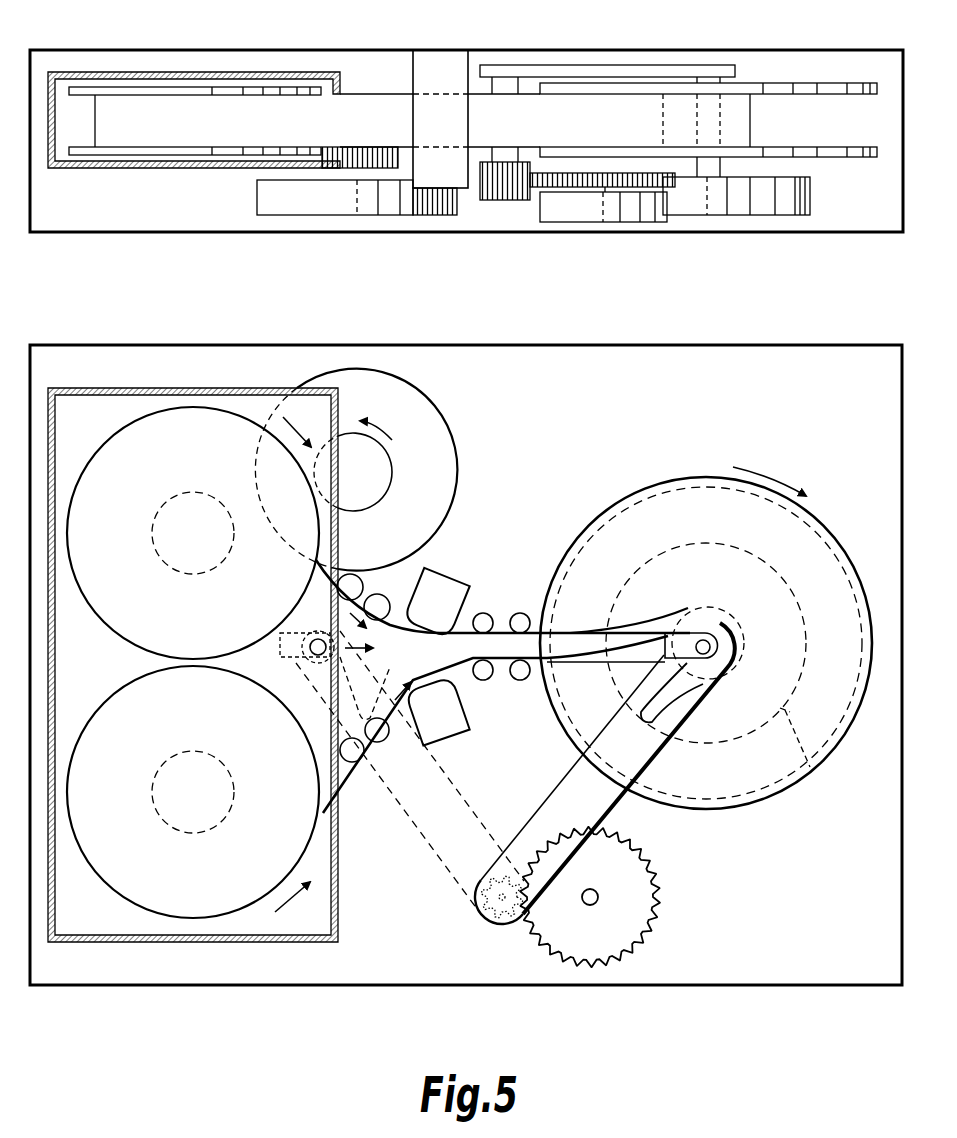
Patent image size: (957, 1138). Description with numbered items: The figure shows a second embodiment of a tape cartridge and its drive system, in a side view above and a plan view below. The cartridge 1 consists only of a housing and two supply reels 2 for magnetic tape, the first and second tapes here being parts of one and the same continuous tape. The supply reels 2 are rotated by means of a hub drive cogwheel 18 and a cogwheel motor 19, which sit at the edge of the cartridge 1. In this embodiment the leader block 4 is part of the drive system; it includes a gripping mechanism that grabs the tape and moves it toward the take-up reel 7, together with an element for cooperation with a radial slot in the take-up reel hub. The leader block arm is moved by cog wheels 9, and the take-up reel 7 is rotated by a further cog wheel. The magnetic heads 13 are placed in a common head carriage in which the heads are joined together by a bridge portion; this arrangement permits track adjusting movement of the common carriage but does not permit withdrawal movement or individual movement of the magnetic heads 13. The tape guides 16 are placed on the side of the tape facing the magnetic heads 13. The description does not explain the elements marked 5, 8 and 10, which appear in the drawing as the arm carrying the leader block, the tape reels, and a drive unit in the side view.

The cartridge 1 is at (257, 922).
The supply reels 2 is at (118, 690).
The leader block 4 is at (300, 615).
The arm 5 is at (632, 760).
The take-up reel 7 is at (680, 503).
The tape reel 8 is at (118, 455).
The cog wheels 9 is at (738, 202).
The motor 10 is at (573, 203).
The magnetic heads 13 is at (448, 170).
The tape guides 16 is at (485, 672).
The hub drive cogwheel 18 is at (383, 165).
The cogwheel motor 19 is at (300, 193).